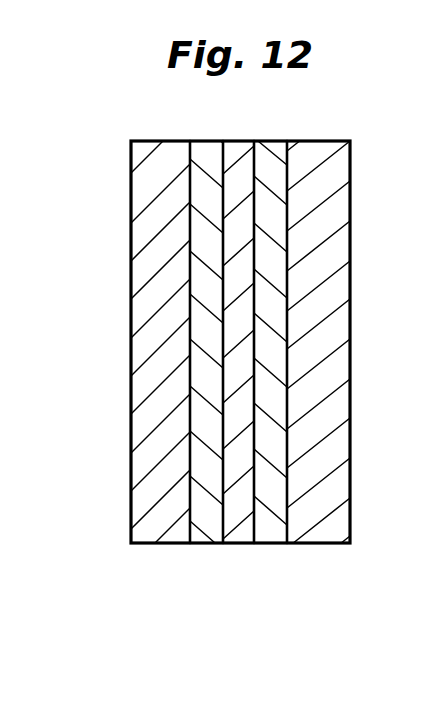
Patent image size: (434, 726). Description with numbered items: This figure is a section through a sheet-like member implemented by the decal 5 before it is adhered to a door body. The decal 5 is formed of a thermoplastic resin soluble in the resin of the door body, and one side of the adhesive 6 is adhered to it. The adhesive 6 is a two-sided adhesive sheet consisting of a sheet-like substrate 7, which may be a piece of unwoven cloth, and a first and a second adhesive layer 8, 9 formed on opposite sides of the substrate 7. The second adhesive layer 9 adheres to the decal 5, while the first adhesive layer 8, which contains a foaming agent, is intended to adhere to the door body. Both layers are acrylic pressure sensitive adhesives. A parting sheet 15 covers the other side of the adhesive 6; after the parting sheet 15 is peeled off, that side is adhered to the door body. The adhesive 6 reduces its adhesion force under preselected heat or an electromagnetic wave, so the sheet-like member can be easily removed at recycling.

The decal 5 is at (140, 545).
The adhesive 6 is at (189, 418).
The second adhesive layer 9 is at (207, 545).
The sheet-like substrate 7 is at (242, 545).
The first adhesive layer 8 is at (254, 390).
The parting sheet 15 is at (320, 545).